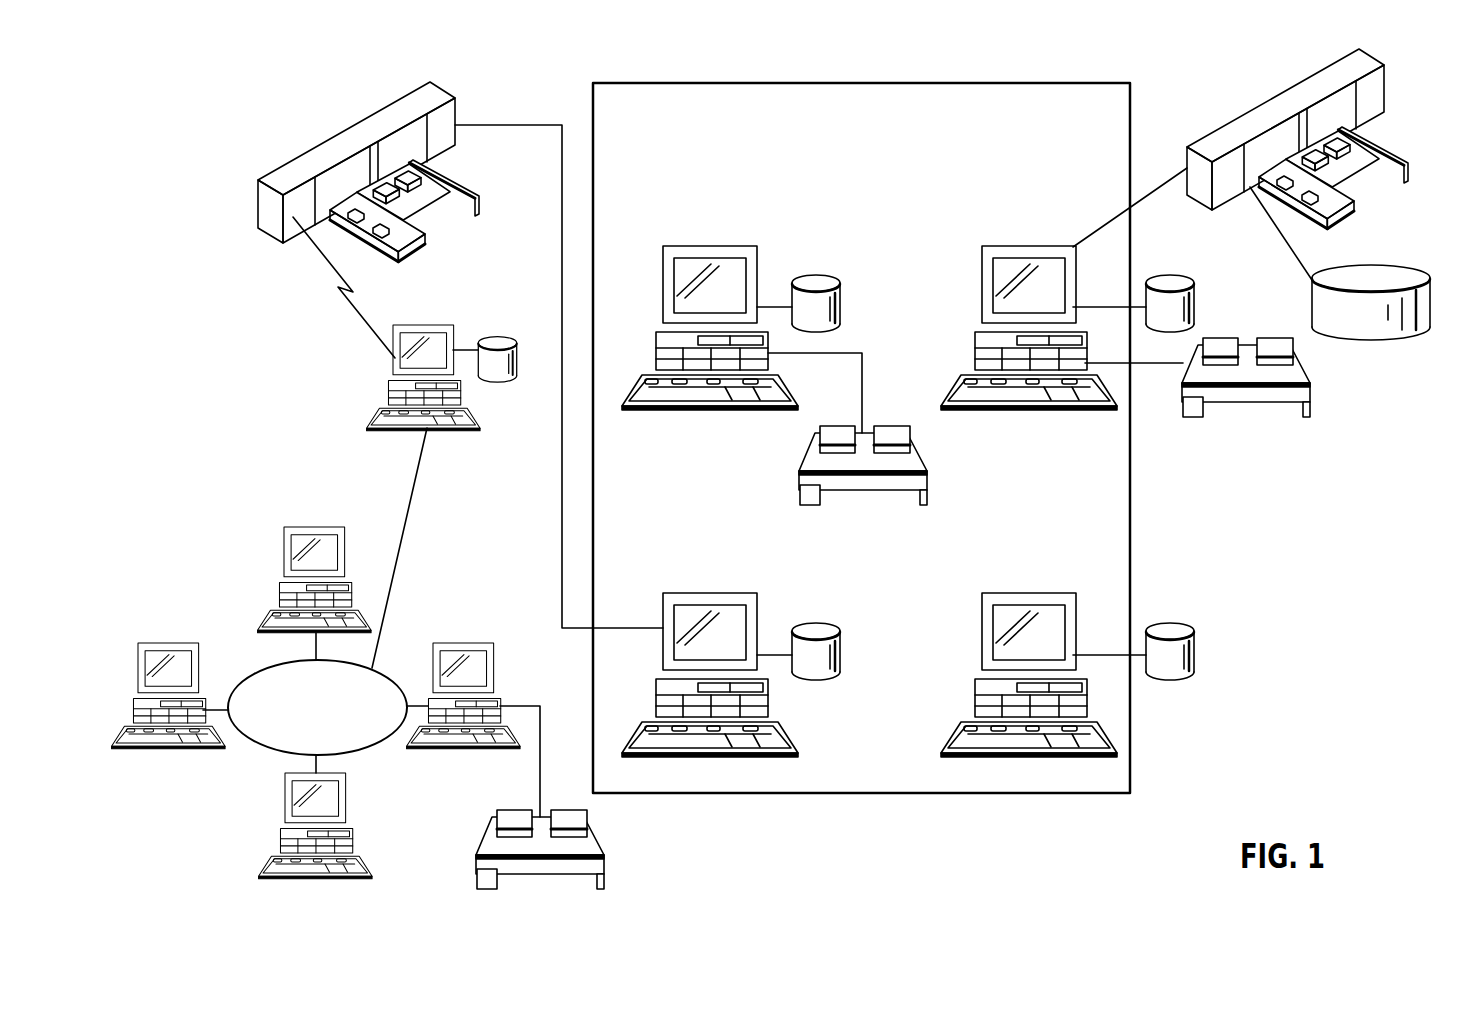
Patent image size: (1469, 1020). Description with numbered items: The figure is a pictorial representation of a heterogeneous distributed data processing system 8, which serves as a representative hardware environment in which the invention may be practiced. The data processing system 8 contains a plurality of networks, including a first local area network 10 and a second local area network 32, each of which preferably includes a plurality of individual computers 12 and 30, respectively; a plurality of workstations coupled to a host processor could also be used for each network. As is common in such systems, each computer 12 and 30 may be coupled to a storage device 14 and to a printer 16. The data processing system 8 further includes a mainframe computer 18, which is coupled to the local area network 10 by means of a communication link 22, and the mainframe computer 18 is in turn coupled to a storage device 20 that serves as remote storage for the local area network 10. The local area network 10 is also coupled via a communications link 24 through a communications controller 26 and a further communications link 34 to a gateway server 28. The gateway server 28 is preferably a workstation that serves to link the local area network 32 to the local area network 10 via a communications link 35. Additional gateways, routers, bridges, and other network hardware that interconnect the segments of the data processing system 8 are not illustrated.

The distributed data processing system 8 is at (578, 86).
The local area network 10 is at (742, 155).
The individual computer 12 is at (683, 246).
The storage device 14 is at (843, 307).
The printer 16 is at (912, 462).
The mainframe computer 18 is at (1207, 147).
The storage device 20 is at (1370, 323).
The communication link 22 is at (1157, 178).
The communications link 24 is at (562, 265).
The communications controller 26 is at (330, 147).
The gateway server 28 is at (437, 325).
The individual computer 30 is at (302, 527).
The local area network 32 is at (268, 753).
The communications link 34 is at (362, 320).
The communications link 35 is at (408, 502).